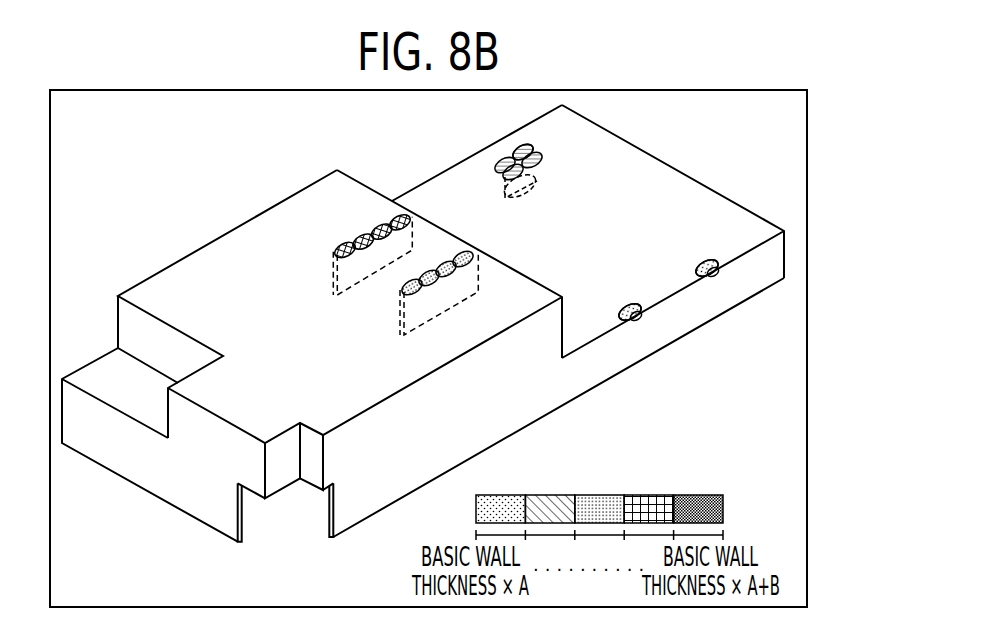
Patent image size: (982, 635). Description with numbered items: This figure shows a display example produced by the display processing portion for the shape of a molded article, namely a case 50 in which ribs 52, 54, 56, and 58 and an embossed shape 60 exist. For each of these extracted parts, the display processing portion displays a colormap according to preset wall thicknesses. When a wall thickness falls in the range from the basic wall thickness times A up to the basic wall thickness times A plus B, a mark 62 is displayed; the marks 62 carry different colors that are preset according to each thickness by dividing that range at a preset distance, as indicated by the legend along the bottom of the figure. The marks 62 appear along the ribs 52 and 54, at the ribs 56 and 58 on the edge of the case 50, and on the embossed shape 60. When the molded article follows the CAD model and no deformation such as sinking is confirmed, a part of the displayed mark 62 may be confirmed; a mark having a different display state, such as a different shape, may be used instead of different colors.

The case 50 is at (647, 357).
The rib 52 is at (331, 275).
The rib 54 is at (430, 303).
The rib 56 is at (618, 315).
The rib 58 is at (693, 272).
The embossed shape 60 is at (540, 172).
The mark 62 is at (358, 239).